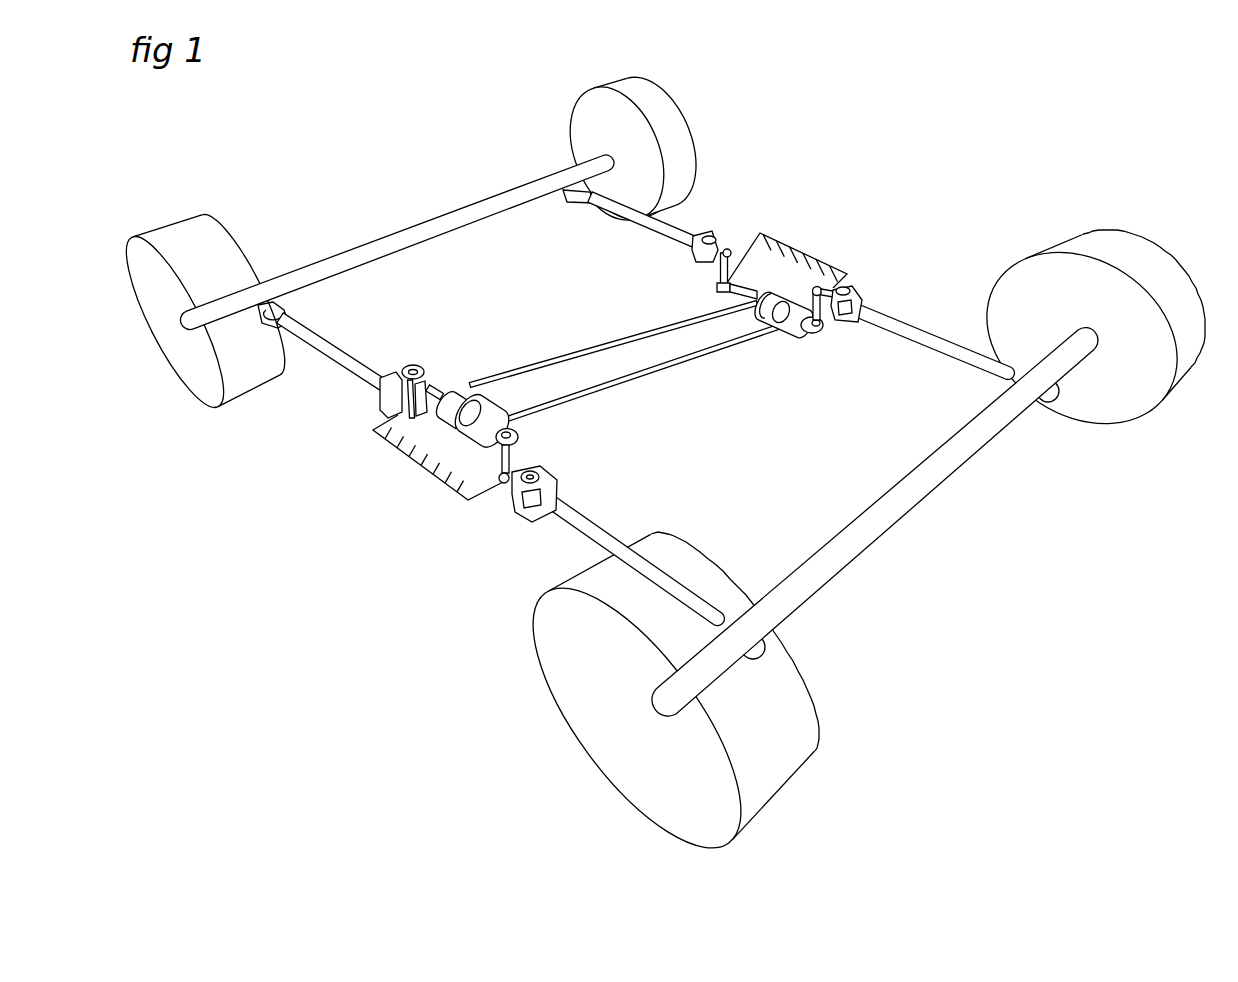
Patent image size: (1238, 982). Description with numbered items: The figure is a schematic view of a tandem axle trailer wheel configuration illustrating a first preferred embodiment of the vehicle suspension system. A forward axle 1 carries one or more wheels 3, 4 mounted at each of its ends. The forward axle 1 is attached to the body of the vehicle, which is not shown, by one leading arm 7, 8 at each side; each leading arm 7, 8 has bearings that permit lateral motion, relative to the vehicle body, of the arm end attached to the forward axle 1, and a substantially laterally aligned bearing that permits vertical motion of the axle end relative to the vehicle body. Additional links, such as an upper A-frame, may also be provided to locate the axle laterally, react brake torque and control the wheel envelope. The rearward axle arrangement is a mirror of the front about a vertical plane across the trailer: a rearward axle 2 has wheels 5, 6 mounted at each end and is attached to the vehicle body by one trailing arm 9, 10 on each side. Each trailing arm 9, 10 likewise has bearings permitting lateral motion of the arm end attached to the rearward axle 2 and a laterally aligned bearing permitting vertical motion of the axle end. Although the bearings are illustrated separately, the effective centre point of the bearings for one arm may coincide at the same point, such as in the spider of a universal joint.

The forward axle 1 is at (329, 263).
The rearward axle 2 is at (917, 490).
The wheel 3 is at (217, 250).
The wheel 4 is at (660, 103).
The wheel 5 is at (1158, 362).
The wheel 6 is at (772, 685).
The leading arm 7 is at (333, 352).
The leading arm 8 is at (680, 233).
The trailing arm 9 is at (907, 325).
The trailing arm 10 is at (647, 572).